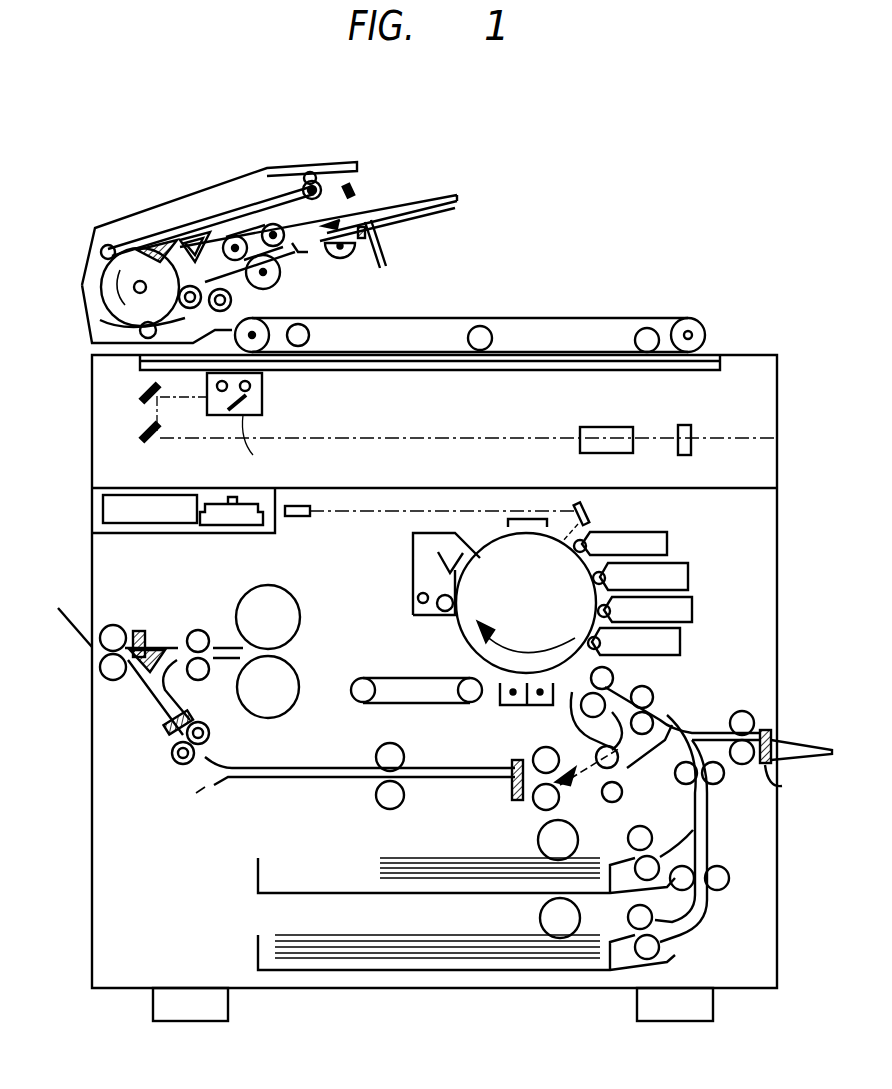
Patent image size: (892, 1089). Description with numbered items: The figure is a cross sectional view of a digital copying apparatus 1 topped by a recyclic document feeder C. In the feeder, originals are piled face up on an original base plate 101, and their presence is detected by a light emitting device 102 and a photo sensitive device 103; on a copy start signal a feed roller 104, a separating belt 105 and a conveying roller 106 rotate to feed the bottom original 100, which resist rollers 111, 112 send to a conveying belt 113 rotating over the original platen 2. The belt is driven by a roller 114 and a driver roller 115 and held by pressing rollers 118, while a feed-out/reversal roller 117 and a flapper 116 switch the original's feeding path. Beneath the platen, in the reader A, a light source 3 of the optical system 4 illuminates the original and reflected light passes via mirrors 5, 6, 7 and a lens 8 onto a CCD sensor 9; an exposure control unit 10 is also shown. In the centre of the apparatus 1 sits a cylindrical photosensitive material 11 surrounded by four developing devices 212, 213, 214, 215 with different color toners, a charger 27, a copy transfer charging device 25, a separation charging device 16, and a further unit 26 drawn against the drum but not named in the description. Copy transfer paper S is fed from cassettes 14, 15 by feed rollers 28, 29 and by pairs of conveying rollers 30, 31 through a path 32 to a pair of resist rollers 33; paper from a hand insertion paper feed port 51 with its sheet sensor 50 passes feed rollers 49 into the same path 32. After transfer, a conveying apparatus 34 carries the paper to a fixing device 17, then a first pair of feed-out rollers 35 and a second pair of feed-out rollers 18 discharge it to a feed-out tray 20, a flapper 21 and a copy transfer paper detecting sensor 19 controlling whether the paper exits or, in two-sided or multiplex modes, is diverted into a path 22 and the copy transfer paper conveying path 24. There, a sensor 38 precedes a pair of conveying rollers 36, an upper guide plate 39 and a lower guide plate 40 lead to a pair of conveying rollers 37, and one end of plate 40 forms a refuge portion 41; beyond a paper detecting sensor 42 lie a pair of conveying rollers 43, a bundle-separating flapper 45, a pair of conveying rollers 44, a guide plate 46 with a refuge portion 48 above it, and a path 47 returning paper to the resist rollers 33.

The copying apparatus 1 is at (92, 405).
The original platen 2 is at (560, 370).
The light source 3 is at (250, 386).
The optical system 4 is at (262, 405).
The mirror 5 is at (255, 446).
The mirror 6 is at (140, 390).
The mirror 7 is at (140, 433).
The lens 8 is at (600, 427).
The CCD sensor 9 is at (684, 425).
The exposure control unit 10 is at (215, 497).
The cylindrical photosensitive material 11 is at (488, 540).
The cassette 14 is at (687, 907).
The cassette 15 is at (650, 960).
The separation charging device 16 is at (497, 700).
The fixing device 17 is at (300, 616).
The second pair of feed-out rollers 18 is at (100, 664).
The copy transfer paper detecting sensor 19 is at (116, 624).
The feed-out tray 20 is at (58, 608).
The flapper 21 is at (155, 648).
The path 22 is at (160, 702).
The copy transfer paper conveying path 24 is at (440, 777).
The copy transfer charging device 25 is at (550, 707).
The cleaner 26 is at (413, 556).
The charger 27 is at (530, 519).
The feed roller 28 is at (538, 840).
The feed roller 29 is at (540, 918).
The pair of conveying rollers 30 is at (722, 785).
The pair of conveying rollers 31 is at (722, 868).
The path 32 is at (667, 713).
The pair of resist rollers 33 is at (614, 676).
The conveying apparatus 34 is at (413, 678).
The first pair of feed-out rollers 35 is at (202, 630).
The pair of conveying rollers 36 is at (204, 722).
The pair of conveying rollers 37 is at (378, 752).
The copy transfer paper detecting sensor 38 is at (162, 735).
The upper guide plate 39 is at (232, 768).
The lower guide plate 40 is at (242, 777).
The refuge portion 41 is at (205, 787).
The paper detecting sensor 42 is at (515, 800).
The pair of conveying rollers 43 is at (533, 757).
The pair of conveying rollers 44 is at (622, 797).
The flapper 45 is at (565, 790).
The guide plate 46 is at (589, 707).
The path 47 is at (625, 768).
The refuge portion 48 is at (585, 718).
The feed rollers 49 is at (742, 711).
The sheet sensor 50 is at (782, 786).
The hand insertion paper feed port 51 is at (788, 745).
The original 100 is at (425, 200).
The original base plate 101 is at (428, 215).
The light emitting device 102 is at (366, 240).
The photo sensitive device 103 is at (356, 183).
The feed roller 104 is at (338, 262).
The separating belt 105 is at (240, 235).
The conveying roller 106 is at (302, 242).
The resist roller 111 is at (200, 285).
The resist roller 112 is at (102, 322).
The conveying belt 113 is at (430, 318).
The roller 114 is at (268, 345).
The driver roller 115 is at (690, 318).
The flapper 116 is at (157, 245).
The feed-out/reversal roller 117 is at (108, 245).
The pressing rollers 118 is at (310, 333).
The developing device 212 is at (680, 641).
The developing device 213 is at (692, 610).
The developing device 214 is at (688, 578).
The developing device 215 is at (667, 542).
The reader A is at (777, 438).
The recyclic document feeder C is at (432, 126).
The copy transfer paper S is at (462, 857).